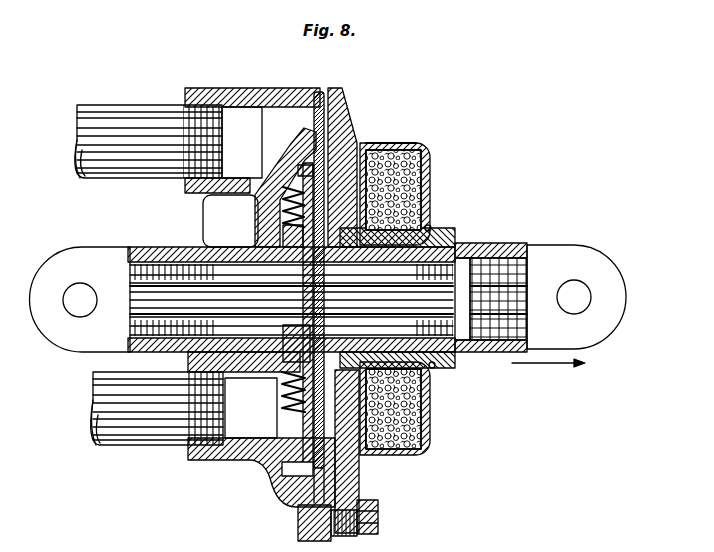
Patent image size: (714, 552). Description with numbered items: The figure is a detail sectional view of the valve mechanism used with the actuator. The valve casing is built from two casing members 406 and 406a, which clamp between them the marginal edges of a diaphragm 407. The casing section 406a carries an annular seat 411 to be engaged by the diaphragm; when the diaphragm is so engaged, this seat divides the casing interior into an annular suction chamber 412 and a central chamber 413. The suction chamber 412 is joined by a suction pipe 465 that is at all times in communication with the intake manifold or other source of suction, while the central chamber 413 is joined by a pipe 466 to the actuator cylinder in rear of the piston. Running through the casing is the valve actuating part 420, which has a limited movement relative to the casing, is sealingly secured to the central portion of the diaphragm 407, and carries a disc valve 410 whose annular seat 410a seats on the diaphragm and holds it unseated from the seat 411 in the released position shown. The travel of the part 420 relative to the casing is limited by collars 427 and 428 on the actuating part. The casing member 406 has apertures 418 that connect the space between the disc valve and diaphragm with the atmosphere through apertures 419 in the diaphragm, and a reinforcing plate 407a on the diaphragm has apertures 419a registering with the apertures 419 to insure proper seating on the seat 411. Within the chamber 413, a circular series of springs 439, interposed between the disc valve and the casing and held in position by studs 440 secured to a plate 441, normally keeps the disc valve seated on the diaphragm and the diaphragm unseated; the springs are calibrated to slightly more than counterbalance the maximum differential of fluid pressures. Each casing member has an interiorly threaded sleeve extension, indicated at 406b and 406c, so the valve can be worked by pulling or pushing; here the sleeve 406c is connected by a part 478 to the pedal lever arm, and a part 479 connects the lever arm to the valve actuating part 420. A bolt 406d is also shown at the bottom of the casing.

The casing member 406 is at (347, 111).
The casing member 406a is at (258, 213).
The interiorly threaded sleeve extension 406b is at (138, 258).
The interiorly threaded sleeve extension 406c is at (500, 253).
The bolt 406d is at (298, 521).
The diaphragm 407 is at (356, 137).
The reinforcing plate 407a is at (372, 450).
The disc valve 410 is at (313, 176).
The annular seat 410a is at (398, 163).
The annular seat 411 is at (308, 132).
The annular suction chamber 412 is at (282, 474).
The central chamber 413 is at (298, 160).
The apertures 418 is at (428, 423).
The apertures 419 is at (398, 170).
The apertures 419a is at (392, 192).
The valve actuating part 420 is at (226, 283).
The collar 427 is at (188, 363).
The collar 428 is at (382, 233).
The springs 439 is at (275, 398).
The studs 440 is at (256, 196).
The plate 441 is at (280, 362).
The suction pipe 465 is at (128, 112).
The pipe 466 is at (160, 435).
The part 478 is at (600, 266).
The part 479 is at (58, 335).